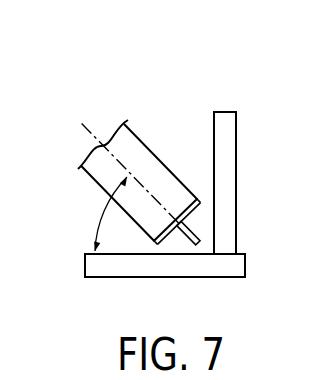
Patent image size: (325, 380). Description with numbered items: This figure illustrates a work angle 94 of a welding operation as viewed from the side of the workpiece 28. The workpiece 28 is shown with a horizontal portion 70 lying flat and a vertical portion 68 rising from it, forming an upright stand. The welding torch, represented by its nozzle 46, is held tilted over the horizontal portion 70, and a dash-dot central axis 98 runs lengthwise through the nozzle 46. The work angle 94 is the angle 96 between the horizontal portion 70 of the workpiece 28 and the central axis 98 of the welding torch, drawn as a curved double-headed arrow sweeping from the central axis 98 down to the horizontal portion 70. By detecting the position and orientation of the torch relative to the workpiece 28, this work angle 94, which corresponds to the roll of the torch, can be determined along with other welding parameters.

The workpiece 28 is at (176, 195).
The nozzle 46 is at (157, 163).
The vertical portion 68 is at (228, 130).
The horizontal portion 70 is at (110, 267).
The work angle 94 is at (60, 120).
The angle 96 is at (103, 206).
The central axis 98 is at (97, 138).